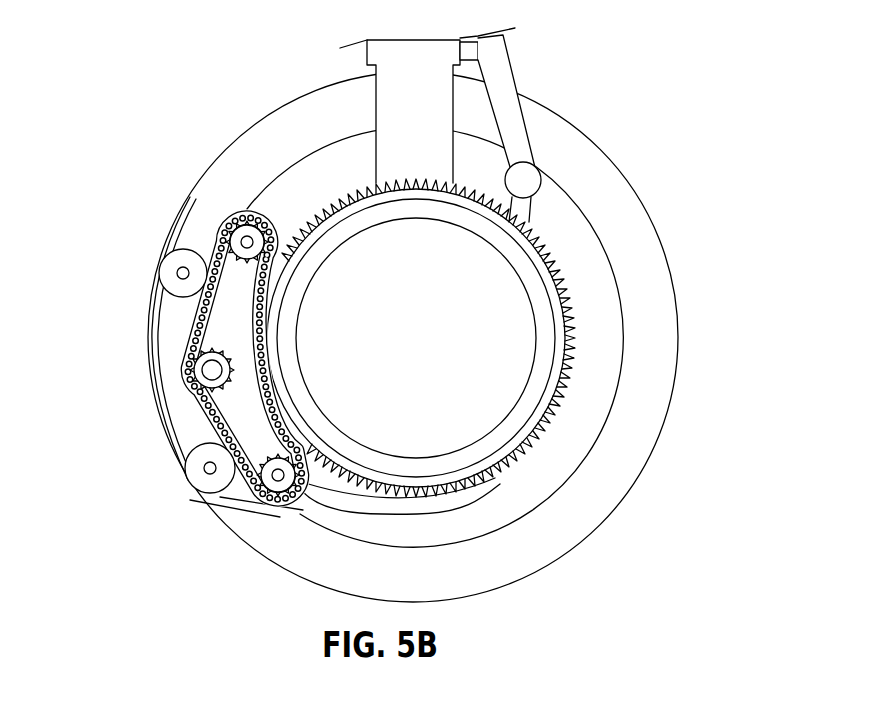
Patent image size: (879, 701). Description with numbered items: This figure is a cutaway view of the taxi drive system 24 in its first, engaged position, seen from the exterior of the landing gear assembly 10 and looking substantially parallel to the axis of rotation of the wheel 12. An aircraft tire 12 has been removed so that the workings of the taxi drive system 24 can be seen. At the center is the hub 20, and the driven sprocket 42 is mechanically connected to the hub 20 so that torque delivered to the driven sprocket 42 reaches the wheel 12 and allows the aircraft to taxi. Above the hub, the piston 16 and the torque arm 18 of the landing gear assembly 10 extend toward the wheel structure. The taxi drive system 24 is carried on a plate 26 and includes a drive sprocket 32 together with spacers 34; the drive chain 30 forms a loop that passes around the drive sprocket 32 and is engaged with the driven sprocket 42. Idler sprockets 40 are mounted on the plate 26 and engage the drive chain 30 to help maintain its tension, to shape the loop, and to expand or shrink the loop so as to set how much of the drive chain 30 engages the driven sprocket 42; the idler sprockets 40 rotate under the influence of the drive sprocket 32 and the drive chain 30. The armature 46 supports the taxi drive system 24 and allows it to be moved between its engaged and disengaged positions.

The aircraft landing gear assembly 10 is at (574, 57).
The aircraft tire 12 is at (645, 220).
The piston 16 is at (383, 97).
The torque arm 18 is at (517, 108).
The hub 20 is at (448, 347).
The taxi drive system 24 is at (118, 268).
The plate 26 is at (167, 323).
The drive chain 30 is at (197, 425).
The drive sprocket 32 is at (208, 370).
The spacers 34 is at (177, 267).
The idler sprockets 40 is at (243, 235).
The driven sprocket 42 is at (568, 333).
The armature 46 is at (487, 492).